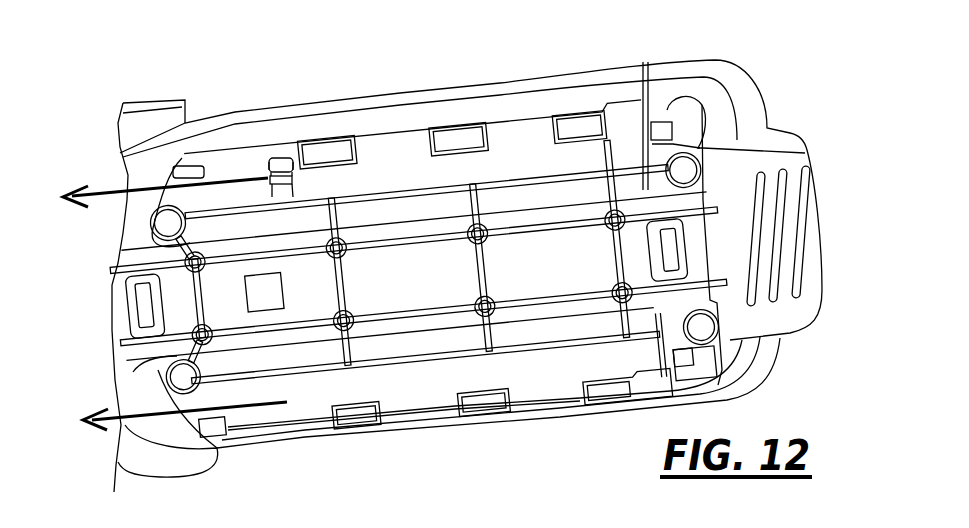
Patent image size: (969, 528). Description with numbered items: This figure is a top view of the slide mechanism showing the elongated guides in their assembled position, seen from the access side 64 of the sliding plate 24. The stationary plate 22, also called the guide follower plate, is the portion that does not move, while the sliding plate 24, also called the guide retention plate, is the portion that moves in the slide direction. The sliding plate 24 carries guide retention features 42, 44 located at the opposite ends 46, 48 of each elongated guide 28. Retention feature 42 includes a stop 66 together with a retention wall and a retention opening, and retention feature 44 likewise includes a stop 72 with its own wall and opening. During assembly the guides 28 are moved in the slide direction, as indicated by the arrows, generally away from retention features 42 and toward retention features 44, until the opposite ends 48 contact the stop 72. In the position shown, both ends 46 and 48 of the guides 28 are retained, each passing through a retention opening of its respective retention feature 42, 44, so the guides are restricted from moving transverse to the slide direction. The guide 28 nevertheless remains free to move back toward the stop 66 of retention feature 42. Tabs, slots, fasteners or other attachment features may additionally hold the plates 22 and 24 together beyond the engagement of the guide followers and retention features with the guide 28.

The stationary plate 22 is at (158, 122).
The sliding plate 24 is at (512, 96).
The elongated guide 28 is at (660, 120).
The guide retention feature 42 is at (642, 153).
The guide retention feature 44 is at (291, 180).
The end 46 is at (667, 110).
The opposite end 48 is at (284, 159).
The side 64 is at (540, 175).
The stop 66 is at (699, 163).
The stop 72 is at (272, 158).